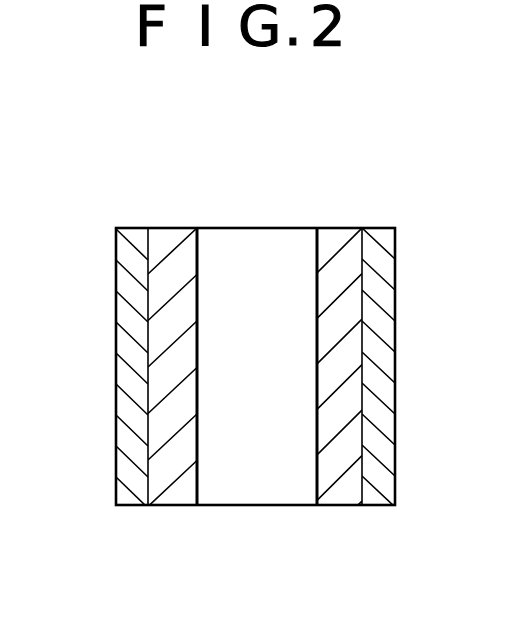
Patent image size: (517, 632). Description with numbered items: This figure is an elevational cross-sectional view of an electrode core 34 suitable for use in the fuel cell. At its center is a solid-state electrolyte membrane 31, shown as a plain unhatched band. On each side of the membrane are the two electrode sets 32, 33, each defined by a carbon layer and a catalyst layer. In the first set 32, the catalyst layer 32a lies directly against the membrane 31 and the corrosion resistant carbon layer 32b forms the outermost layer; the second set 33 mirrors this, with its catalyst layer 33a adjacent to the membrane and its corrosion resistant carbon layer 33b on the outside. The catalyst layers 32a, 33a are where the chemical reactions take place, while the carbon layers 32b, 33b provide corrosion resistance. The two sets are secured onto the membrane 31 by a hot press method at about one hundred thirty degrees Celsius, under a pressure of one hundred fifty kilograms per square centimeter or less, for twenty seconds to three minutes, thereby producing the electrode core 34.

The solid-state electrolyte membrane 31 is at (252, 495).
The electrode set 32 is at (145, 364).
The catalyst layer 32a is at (180, 505).
The corrosion resistant carbon layer 32b is at (123, 505).
The electrode set 33 is at (376, 365).
The catalyst layer 33a is at (342, 505).
The corrosion resistant carbon layer 33b is at (380, 505).
The electrode core 34 is at (112, 316).